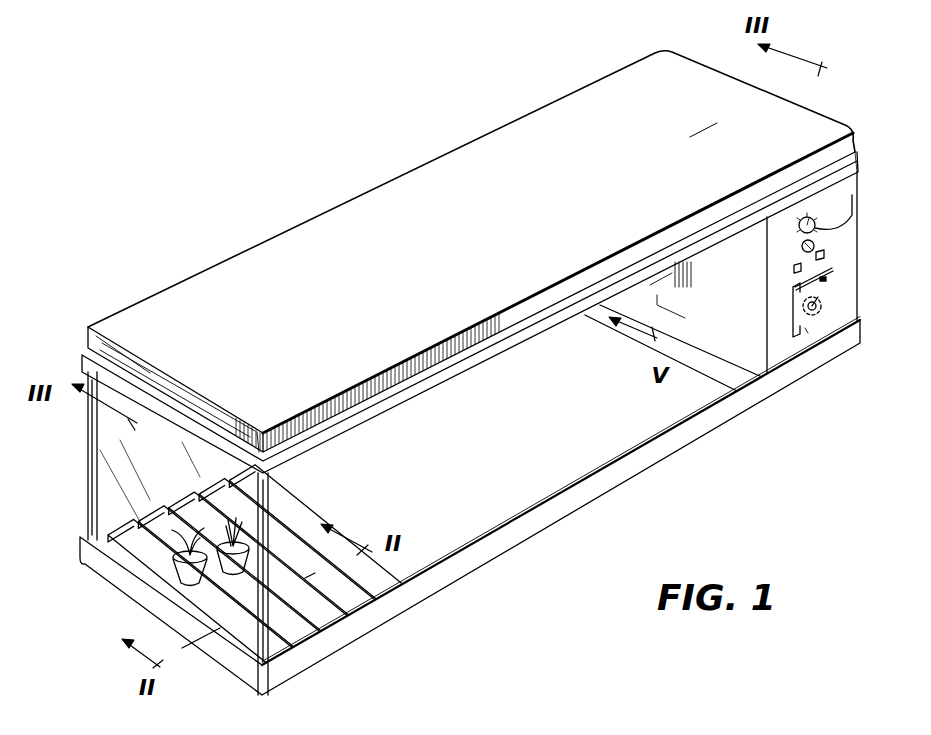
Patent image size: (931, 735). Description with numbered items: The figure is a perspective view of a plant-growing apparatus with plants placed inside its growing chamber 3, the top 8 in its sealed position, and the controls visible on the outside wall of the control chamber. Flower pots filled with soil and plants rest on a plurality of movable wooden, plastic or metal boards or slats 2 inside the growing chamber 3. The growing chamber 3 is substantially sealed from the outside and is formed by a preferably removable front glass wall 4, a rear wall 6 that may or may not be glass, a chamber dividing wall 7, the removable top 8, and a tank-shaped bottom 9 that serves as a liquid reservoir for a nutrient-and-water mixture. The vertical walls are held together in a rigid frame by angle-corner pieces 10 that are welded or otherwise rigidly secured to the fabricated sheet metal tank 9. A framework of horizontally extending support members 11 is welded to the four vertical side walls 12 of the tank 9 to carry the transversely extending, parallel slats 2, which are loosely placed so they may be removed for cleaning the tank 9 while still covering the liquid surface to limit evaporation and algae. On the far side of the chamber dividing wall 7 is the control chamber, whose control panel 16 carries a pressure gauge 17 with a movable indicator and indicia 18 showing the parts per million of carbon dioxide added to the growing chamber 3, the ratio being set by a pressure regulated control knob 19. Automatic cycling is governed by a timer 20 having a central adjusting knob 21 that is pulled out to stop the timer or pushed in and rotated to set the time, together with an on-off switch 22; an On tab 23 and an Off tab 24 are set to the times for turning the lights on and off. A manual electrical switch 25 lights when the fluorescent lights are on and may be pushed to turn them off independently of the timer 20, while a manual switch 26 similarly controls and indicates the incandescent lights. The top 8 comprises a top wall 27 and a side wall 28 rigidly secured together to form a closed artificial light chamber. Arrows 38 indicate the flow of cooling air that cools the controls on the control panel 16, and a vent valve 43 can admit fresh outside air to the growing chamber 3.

The boards or slats 2 is at (333, 595).
The growing chamber 3 is at (576, 459).
The front glass wall 4 is at (566, 420).
The rear wall 6 is at (118, 478).
The chamber dividing wall 7 is at (724, 347).
The top section 8 is at (403, 185).
The tank-shaped bottom 9 is at (503, 540).
The angle-corner pieces 10 is at (92, 447).
The support members 11 is at (97, 562).
The vertical side walls 12 is at (133, 588).
The control panel 16 is at (847, 198).
The pressure gauge 17 is at (848, 224).
The indicia 18 is at (792, 218).
The pressure regulated control knob 19 is at (817, 242).
The timer 20 is at (858, 322).
The central adjusting knob 21 is at (823, 318).
The on-off switch 22 is at (828, 280).
The On tab 23 is at (805, 330).
The Off tab 24 is at (823, 293).
The manual electrical switch 25 is at (793, 268).
The manual switch 26 is at (827, 255).
The top wall 27 is at (500, 280).
The side wall 28 is at (257, 440).
The arrows 38 is at (152, 375).
The vent valve 43 is at (670, 290).